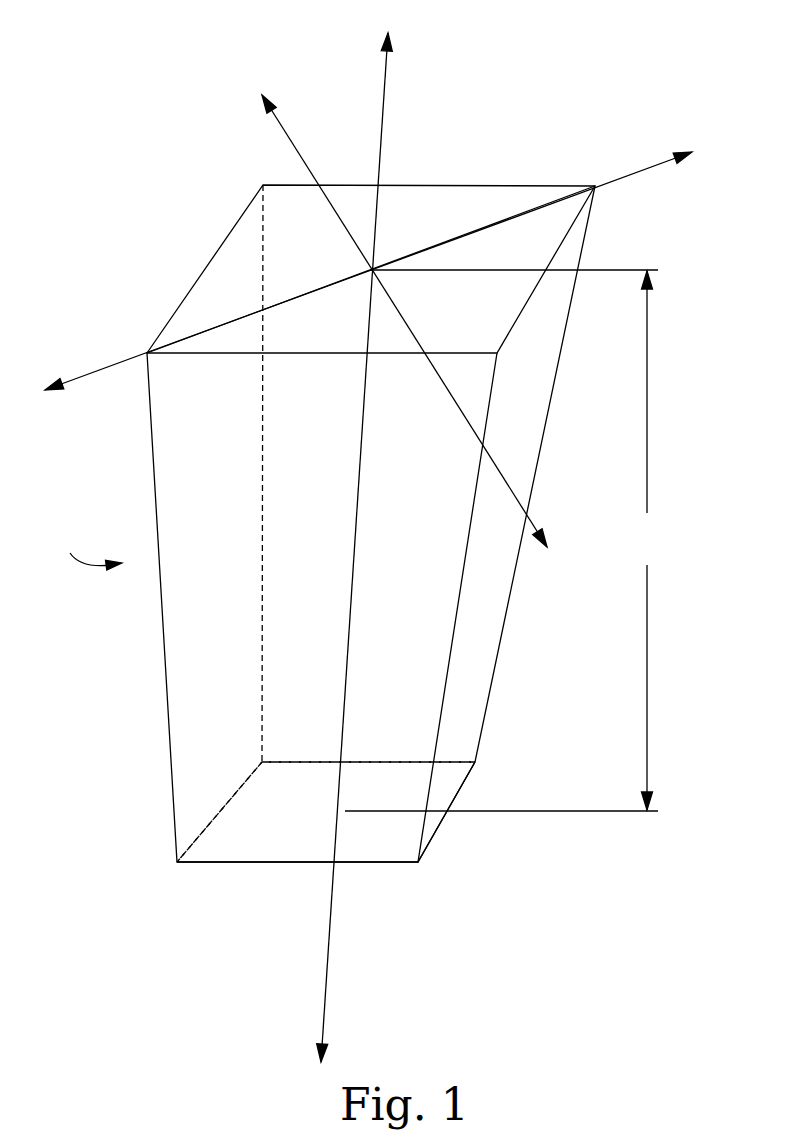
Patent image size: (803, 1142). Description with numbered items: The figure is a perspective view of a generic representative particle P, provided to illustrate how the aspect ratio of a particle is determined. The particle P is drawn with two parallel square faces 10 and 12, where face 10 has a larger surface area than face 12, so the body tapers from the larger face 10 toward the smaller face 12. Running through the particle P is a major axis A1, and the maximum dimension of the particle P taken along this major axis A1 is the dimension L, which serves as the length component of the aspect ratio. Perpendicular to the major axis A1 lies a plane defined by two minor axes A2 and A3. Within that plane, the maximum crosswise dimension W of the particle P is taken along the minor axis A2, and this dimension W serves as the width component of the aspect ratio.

The square face 10 is at (222, 288).
The square face 12 is at (258, 832).
The major axis A1 is at (361, 536).
The minor axis A2 is at (382, 260).
The minor axis A3 is at (399, 306).
The maximum crosswise dimension W is at (505, 200).
The maximum dimension L is at (501, 540).
The particle P is at (88, 553).